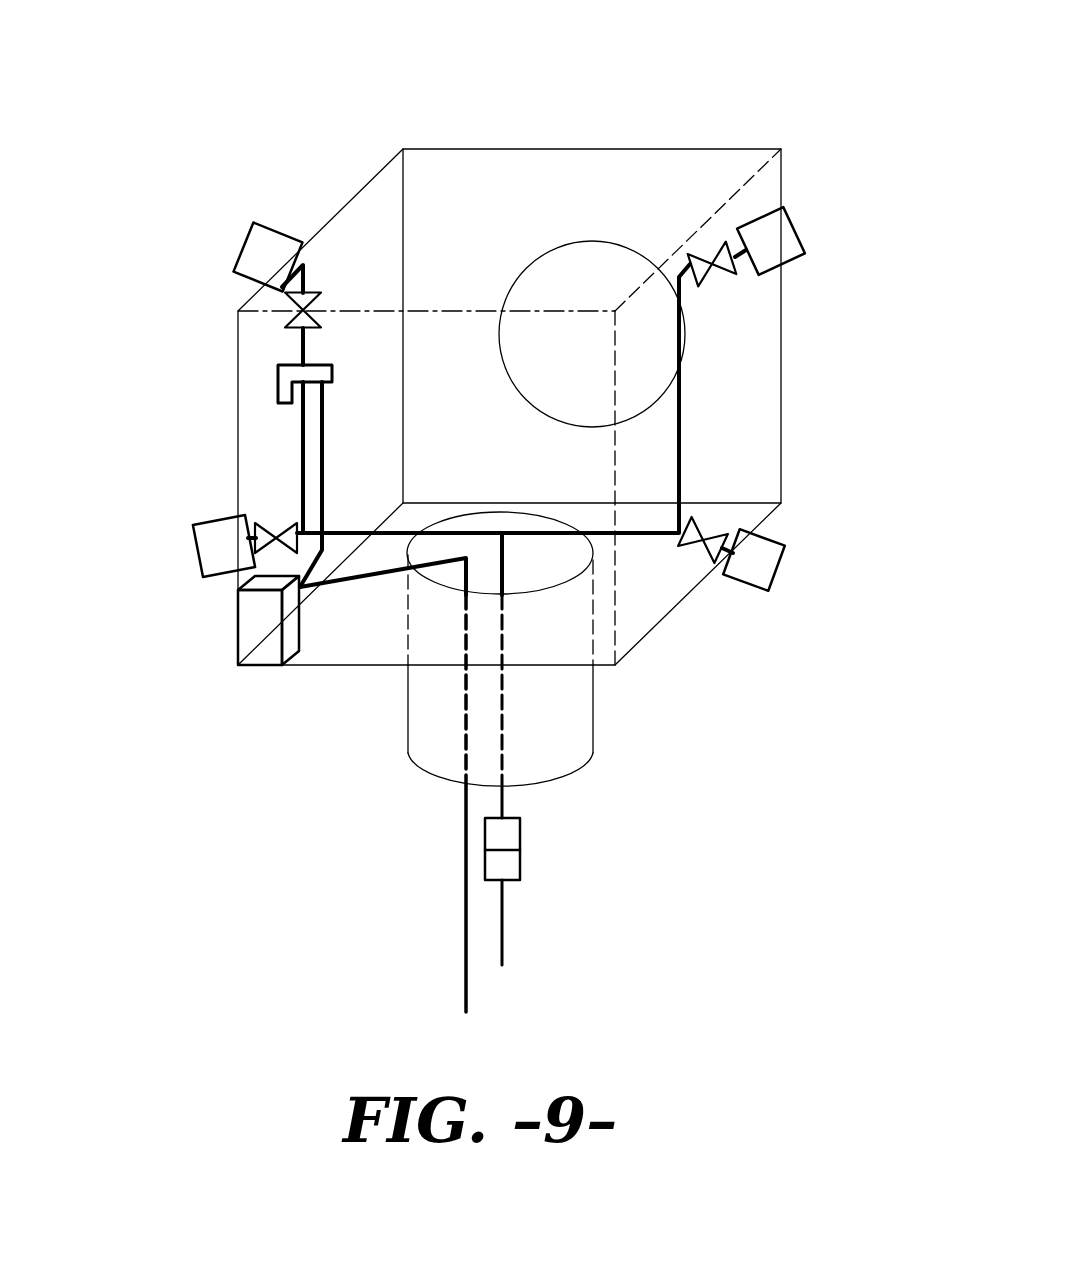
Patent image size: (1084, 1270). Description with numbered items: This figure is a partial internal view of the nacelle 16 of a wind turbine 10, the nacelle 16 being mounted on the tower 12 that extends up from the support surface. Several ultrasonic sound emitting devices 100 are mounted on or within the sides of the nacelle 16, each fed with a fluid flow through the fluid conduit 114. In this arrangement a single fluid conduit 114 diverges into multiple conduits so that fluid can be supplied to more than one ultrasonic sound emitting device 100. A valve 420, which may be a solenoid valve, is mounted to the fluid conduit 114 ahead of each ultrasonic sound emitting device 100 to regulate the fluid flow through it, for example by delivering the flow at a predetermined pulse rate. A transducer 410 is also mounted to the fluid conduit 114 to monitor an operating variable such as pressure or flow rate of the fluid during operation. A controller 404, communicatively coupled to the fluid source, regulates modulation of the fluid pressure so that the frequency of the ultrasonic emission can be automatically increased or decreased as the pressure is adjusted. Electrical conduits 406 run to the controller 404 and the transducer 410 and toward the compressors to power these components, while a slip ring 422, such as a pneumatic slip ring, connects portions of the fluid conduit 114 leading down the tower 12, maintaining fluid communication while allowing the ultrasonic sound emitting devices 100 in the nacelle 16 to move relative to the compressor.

The wind turbine 10 is at (278, 46).
The nacelle 16 is at (597, 147).
The tower 12 is at (392, 733).
The ultrasonic sound emitting device 100 is at (240, 248).
The valve 420 is at (300, 327).
The transducer 410 is at (278, 385).
The controller 404 is at (257, 623).
The electrical conduit 406 is at (463, 907).
The fluid conduit 114 is at (503, 927).
The slip ring 422 is at (522, 833).